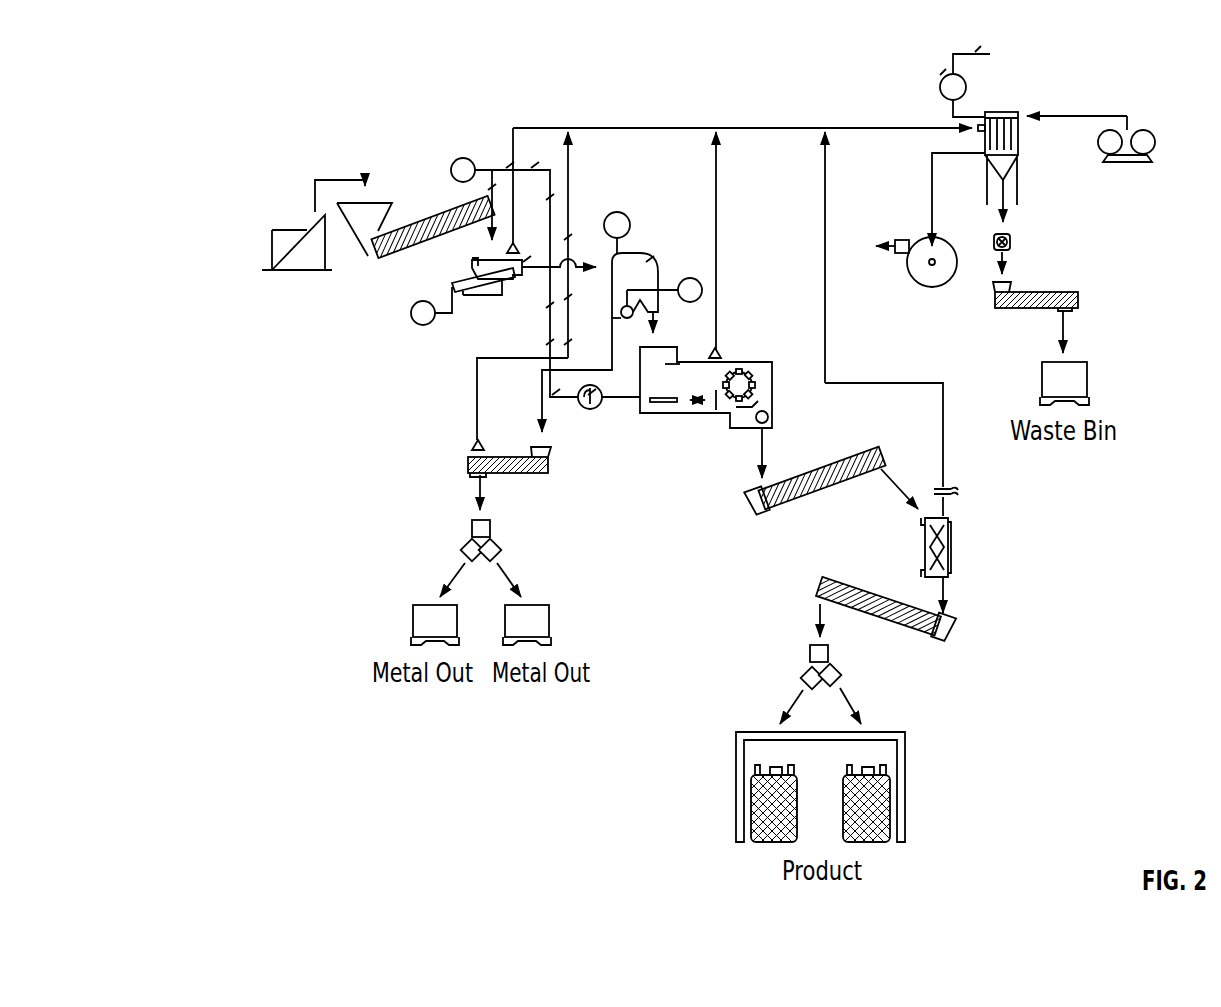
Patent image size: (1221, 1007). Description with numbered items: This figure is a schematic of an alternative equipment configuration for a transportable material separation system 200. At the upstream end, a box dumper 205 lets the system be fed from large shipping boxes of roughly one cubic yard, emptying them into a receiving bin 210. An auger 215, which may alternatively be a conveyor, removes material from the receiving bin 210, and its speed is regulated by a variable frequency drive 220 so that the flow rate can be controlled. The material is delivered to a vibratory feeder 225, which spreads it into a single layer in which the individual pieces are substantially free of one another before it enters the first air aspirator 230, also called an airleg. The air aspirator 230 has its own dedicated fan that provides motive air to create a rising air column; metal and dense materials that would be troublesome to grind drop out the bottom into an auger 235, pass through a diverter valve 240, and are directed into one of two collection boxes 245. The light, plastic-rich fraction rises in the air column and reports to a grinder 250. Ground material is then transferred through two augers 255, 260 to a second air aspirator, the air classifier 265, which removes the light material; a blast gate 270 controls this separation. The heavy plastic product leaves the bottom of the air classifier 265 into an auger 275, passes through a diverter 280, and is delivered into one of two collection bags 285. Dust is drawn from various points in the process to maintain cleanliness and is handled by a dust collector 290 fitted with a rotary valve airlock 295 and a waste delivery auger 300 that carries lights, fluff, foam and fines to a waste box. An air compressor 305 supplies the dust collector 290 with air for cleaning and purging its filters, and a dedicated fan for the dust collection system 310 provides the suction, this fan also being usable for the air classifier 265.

The transportable material separation system 200 is at (252, 104).
The box dumper 205 is at (285, 231).
The receiving bin 210 is at (367, 220).
The auger 215 is at (460, 204).
The variable frequency drive 220 is at (452, 284).
The vibratory feeder 225 is at (479, 261).
The air aspirator 230 is at (636, 260).
The auger 235 is at (468, 463).
The diverter valve 240 is at (471, 532).
The collection boxes 245 is at (420, 620).
The grinder 250 is at (754, 362).
The auger 255 is at (757, 421).
The auger 260 is at (755, 497).
The air classifier 265 is at (925, 540).
The blast gate 270 is at (950, 490).
The auger 275 is at (815, 590).
The diverter 280 is at (827, 655).
The collection bags 285 is at (740, 785).
The dust collector 290 is at (1006, 130).
The rotary valve airlock 295 is at (1012, 240).
The waste delivery auger 300 is at (1040, 292).
The air compressor 305 is at (1145, 138).
The dust collection system fan 310 is at (908, 258).